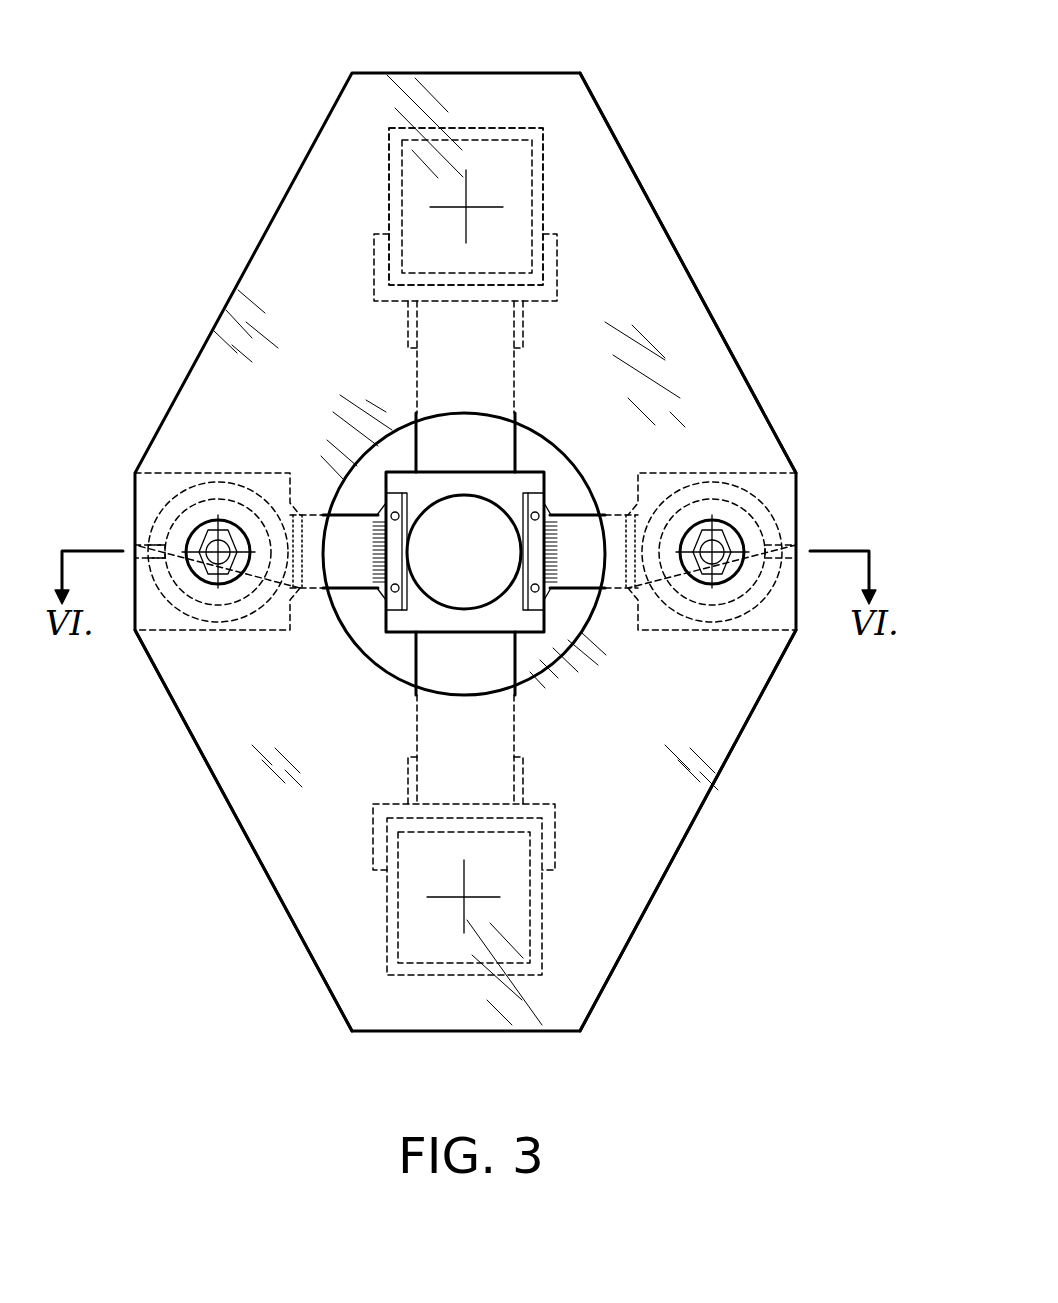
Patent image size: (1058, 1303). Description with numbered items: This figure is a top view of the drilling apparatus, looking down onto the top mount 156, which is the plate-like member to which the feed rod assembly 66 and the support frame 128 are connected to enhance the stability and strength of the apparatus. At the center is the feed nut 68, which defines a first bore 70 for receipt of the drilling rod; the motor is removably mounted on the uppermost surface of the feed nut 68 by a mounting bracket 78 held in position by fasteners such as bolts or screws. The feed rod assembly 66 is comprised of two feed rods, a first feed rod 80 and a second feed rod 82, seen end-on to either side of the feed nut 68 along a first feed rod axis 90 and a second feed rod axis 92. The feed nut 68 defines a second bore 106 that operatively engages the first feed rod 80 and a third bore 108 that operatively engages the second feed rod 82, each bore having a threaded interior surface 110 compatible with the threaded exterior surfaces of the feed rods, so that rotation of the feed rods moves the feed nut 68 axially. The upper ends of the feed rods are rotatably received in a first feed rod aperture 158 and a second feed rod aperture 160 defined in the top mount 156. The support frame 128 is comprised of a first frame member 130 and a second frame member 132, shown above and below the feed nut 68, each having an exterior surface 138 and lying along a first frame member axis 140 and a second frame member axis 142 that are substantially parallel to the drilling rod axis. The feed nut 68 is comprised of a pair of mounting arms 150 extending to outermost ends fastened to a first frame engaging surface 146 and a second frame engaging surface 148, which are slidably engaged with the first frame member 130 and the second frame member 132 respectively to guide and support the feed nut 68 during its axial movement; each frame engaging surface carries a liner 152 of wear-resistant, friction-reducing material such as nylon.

The feed rod assembly 66 is at (808, 493).
The feed nut 68 is at (515, 485).
The first bore 70 is at (430, 600).
The mounting bracket 78 is at (535, 513).
The first feed rod 80 is at (227, 560).
The second feed rod 82 is at (688, 570).
The first feed rod axis 90 is at (238, 522).
The second feed rod axis 92 is at (698, 560).
The second bore 106 is at (205, 518).
The third bore 108 is at (730, 520).
The threaded interior surface 110 is at (192, 522).
The support frame 128 is at (563, 182).
The first frame member 130 is at (498, 128).
The second frame member 132 is at (440, 975).
The exterior surface 138 is at (543, 221).
The first frame member axis 140 is at (466, 207).
The second frame member axis 142 is at (464, 897).
The first frame engaging surface 146 is at (392, 291).
The second frame engaging surface 148 is at (555, 848).
The mounting arms 150 is at (485, 355).
The liner 152 is at (448, 285).
The top mount 156 is at (670, 307).
The first feed rod aperture 158 is at (194, 590).
The second feed rod aperture 160 is at (727, 588).